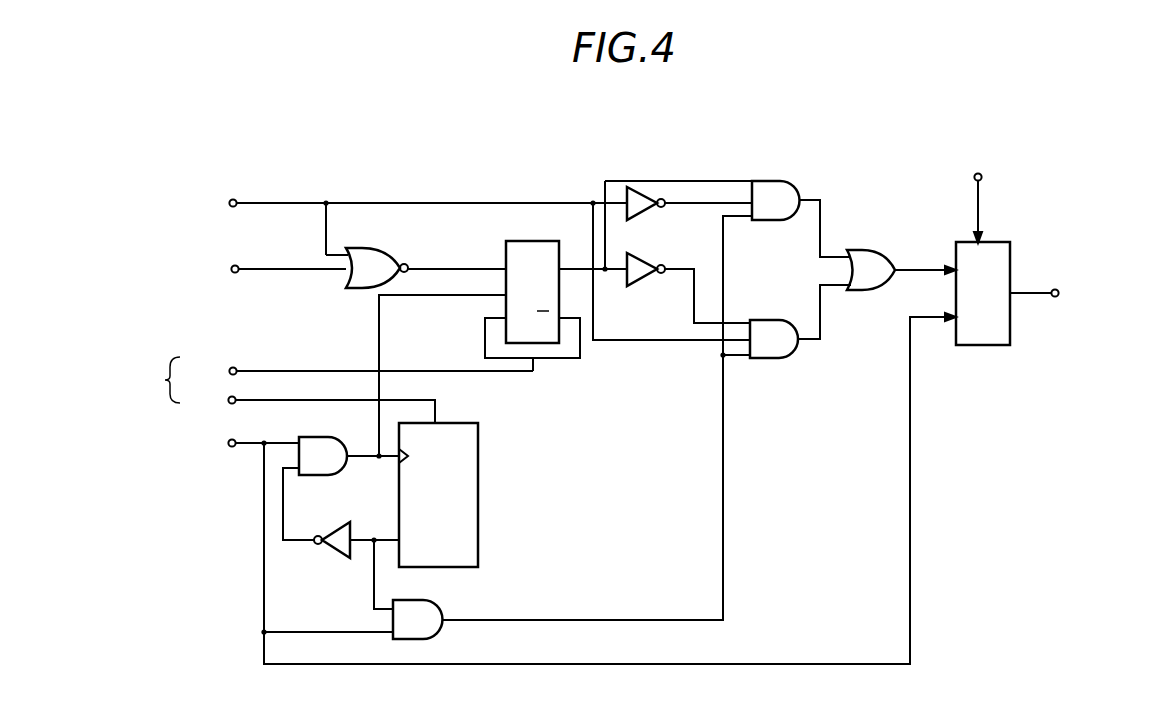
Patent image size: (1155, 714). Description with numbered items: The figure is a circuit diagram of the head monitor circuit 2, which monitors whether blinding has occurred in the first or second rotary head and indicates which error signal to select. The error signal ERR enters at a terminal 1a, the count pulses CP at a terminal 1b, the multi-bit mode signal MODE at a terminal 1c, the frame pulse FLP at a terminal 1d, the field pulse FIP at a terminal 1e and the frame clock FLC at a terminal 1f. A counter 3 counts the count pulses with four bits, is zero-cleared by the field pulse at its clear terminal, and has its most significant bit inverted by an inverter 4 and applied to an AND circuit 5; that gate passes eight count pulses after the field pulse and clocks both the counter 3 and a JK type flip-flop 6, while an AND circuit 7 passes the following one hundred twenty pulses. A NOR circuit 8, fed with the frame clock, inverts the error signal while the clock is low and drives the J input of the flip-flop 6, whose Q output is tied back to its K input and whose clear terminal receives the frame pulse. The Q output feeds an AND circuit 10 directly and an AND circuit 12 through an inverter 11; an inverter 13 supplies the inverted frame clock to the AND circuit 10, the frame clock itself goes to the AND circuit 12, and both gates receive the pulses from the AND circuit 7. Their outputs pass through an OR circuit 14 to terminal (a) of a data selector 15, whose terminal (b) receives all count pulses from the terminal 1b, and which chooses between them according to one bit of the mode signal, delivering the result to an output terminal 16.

The terminal 1a is at (237, 265).
The terminal 1b is at (232, 447).
The terminal 1c is at (976, 173).
The terminal 1d is at (236, 367).
The terminal 1e is at (231, 404).
The terminal 1f is at (235, 199).
The head monitor circuit 2 is at (826, 120).
The counter 3 is at (479, 423).
The inverter 4 is at (333, 529).
The AND circuit 5 is at (331, 437).
The JK type flip-flop 6 is at (547, 241).
The AND circuit 7 is at (438, 611).
The NOR circuit 8 is at (386, 258).
The AND circuit 10 is at (772, 181).
The inverter 11 is at (647, 260).
The AND circuit 12 is at (770, 322).
The inverter 13 is at (648, 212).
The OR circuit 14 is at (877, 250).
The data selector 15 is at (1011, 242).
The output terminal to latch and flip-flop 54 16 is at (1057, 289).